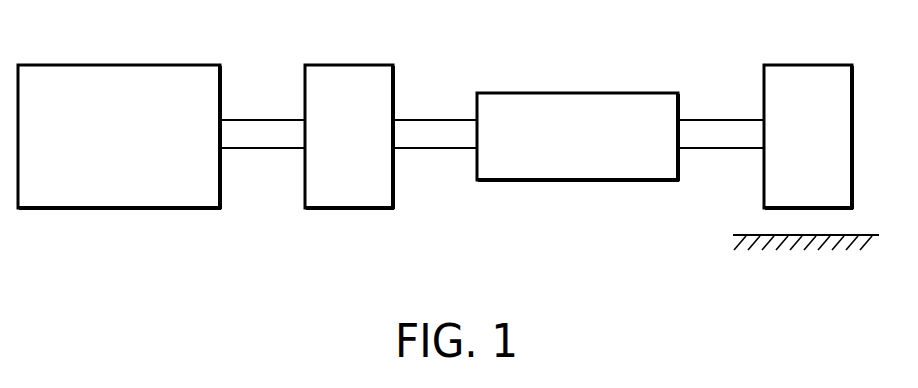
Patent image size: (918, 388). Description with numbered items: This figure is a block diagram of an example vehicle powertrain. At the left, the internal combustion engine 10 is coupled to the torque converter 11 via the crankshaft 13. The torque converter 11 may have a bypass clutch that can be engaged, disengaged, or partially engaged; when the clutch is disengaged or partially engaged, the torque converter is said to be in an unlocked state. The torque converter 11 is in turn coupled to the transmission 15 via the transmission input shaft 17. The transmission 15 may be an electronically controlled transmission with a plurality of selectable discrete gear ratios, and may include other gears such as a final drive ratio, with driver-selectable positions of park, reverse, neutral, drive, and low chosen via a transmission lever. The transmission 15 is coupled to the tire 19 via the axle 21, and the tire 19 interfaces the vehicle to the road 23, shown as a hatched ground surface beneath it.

The internal combustion engine 10 is at (118, 65).
The torque converter 11 is at (350, 65).
The crankshaft 13 is at (230, 120).
The transmission 15 is at (577, 93).
The transmission input shaft 17 is at (405, 120).
The tire 19 is at (808, 65).
The axle 21 is at (692, 120).
The road 23 is at (757, 235).